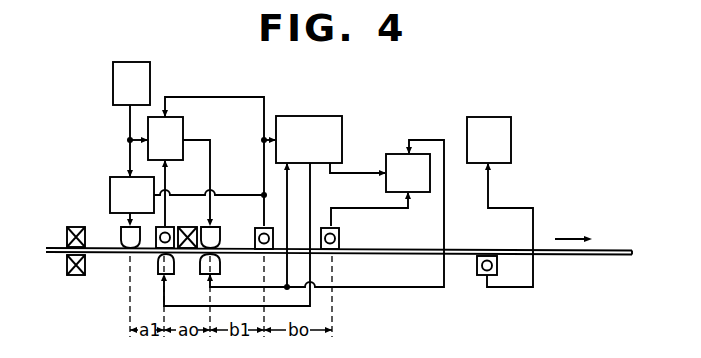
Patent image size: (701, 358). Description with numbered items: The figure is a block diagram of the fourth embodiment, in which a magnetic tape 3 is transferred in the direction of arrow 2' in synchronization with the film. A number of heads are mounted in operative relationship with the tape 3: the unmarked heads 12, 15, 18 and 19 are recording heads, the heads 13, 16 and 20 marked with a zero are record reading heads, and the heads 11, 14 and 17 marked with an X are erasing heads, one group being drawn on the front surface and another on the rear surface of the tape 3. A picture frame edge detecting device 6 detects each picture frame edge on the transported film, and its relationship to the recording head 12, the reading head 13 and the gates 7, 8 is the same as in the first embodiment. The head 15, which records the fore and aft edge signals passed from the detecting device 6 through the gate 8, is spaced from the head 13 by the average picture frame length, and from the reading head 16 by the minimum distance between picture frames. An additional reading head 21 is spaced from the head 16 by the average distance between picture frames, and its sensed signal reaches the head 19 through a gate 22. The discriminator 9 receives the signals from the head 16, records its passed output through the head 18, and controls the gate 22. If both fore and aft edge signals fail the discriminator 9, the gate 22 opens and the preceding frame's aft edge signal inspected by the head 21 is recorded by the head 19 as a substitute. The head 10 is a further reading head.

The arrow 2' is at (571, 230).
The magnetic tape 3 is at (613, 249).
The picture frame edge detecting device 6 is at (150, 72).
The gate 7 is at (110, 185).
The gate 8 is at (183, 122).
The discriminator 9 is at (342, 124).
The record reading head 10 is at (511, 127).
The erasing head 11 is at (67, 233).
The recording head 12 is at (121, 234).
The record reading head 13 is at (174, 227).
The erasing head 14 is at (194, 228).
The recording head 15 is at (234, 226).
The record reading head 16 is at (255, 232).
The erasing head 17 is at (67, 270).
The recording head 18 is at (158, 269).
The recording head 19 is at (200, 270).
The record reading head 20 is at (477, 270).
The reading head 21 is at (339, 239).
The gate 22 is at (386, 157).